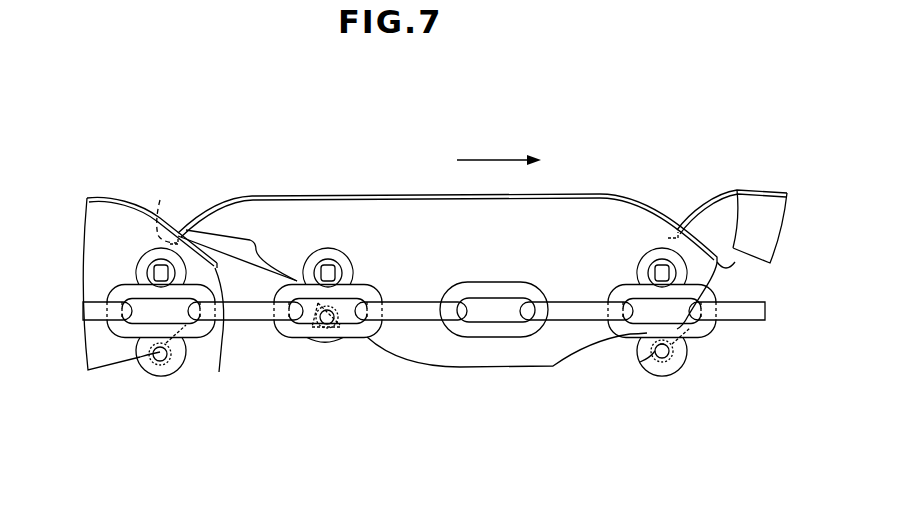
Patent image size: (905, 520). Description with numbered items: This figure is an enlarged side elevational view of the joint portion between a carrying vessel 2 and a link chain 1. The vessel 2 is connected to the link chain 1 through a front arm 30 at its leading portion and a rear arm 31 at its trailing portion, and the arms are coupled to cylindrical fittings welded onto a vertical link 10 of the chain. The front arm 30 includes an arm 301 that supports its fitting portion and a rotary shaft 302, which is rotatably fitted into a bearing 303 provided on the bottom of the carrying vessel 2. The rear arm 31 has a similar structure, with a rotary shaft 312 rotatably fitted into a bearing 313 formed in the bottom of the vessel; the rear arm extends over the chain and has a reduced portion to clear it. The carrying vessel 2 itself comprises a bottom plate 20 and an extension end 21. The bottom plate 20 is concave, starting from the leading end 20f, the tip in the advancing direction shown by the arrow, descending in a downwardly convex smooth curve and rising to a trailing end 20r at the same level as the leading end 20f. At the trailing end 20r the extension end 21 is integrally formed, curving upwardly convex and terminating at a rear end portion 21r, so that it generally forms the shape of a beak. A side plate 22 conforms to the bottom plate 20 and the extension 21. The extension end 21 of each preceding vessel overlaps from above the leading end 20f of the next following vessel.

The link chain 1 is at (565, 324).
The carrying vessel 2 is at (435, 270).
The vertical link 10 is at (283, 334).
The bottom plate 20 is at (460, 370).
The leading end 20f is at (719, 193).
The trailing end 20r is at (295, 255).
The extension end 21 is at (252, 245).
The rear end portion 21r is at (160, 200).
The side plate 22 is at (375, 210).
The front arm 30 is at (669, 397).
The arm 301 is at (632, 345).
The rotary shaft 302 is at (656, 360).
The bearing 303 is at (668, 358).
The rear arm 31 is at (357, 385).
The rotary shaft 312 is at (325, 322).
The bearing 313 is at (343, 337).